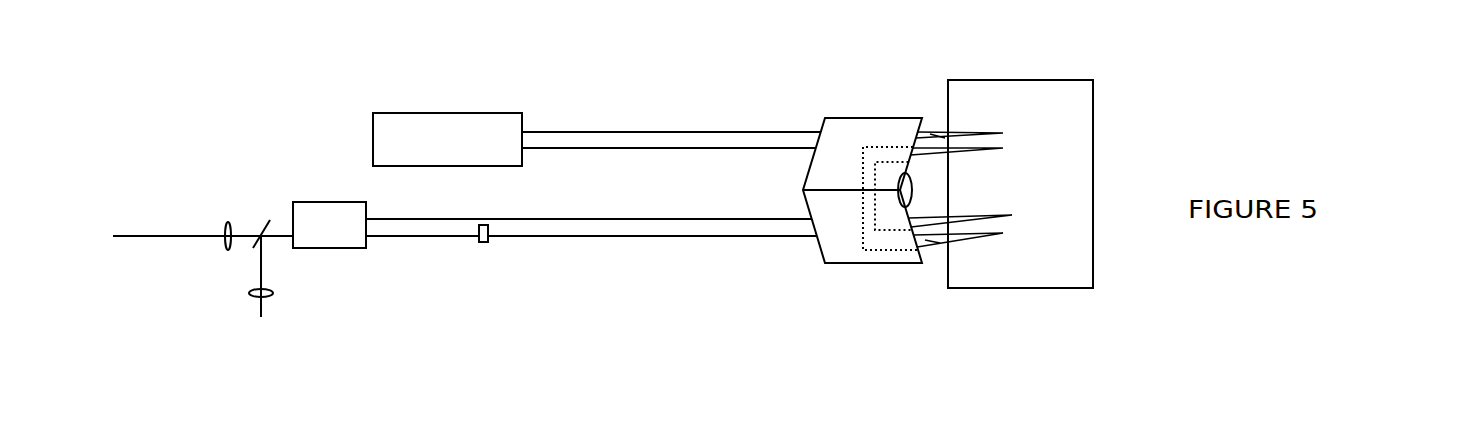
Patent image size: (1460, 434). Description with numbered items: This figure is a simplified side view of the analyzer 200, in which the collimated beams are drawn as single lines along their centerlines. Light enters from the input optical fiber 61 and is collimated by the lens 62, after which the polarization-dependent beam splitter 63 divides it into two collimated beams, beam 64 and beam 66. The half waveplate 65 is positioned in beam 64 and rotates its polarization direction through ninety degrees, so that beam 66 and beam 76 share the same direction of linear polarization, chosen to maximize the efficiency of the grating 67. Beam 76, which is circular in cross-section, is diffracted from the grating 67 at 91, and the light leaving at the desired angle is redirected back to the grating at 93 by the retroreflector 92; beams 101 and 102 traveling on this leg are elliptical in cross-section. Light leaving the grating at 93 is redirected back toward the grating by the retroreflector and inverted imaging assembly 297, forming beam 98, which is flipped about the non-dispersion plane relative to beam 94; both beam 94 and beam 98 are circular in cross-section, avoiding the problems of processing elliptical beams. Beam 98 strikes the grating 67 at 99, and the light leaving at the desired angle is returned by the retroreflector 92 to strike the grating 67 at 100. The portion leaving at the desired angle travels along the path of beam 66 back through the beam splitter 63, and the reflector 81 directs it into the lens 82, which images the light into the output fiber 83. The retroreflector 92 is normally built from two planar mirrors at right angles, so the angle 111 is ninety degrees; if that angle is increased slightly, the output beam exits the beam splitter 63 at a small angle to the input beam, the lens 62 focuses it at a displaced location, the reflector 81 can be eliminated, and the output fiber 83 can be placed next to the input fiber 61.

The input optical fiber 61 is at (176, 237).
The lens 62 is at (227, 247).
The polarization-dependent beam splitter 63 is at (342, 242).
The beam 64 is at (403, 238).
The half waveplate 65 is at (482, 243).
The beam 66 is at (697, 218).
The grating 67 is at (1093, 163).
The beam 76 is at (565, 240).
The reflector 81 is at (255, 220).
The lens 82 is at (270, 285).
The output fiber 83 is at (258, 308).
The diffraction point 91 is at (1003, 233).
The retroreflector 92 is at (833, 257).
The diffraction point 93 is at (1003, 133).
The beam 94 is at (633, 130).
The beam 98 is at (605, 153).
The diffraction point 99 is at (1003, 148).
The diffraction point 100 is at (1012, 215).
The beam 101 is at (933, 247).
The beam 102 is at (938, 140).
The angle 111 is at (908, 182).
The analyzer 200 is at (1350, 123).
The retroreflector and inverted imaging assembly 297 is at (447, 117).